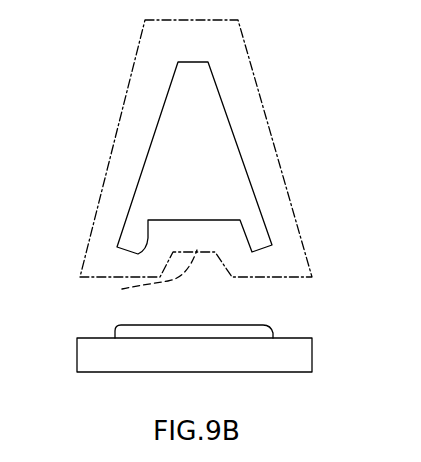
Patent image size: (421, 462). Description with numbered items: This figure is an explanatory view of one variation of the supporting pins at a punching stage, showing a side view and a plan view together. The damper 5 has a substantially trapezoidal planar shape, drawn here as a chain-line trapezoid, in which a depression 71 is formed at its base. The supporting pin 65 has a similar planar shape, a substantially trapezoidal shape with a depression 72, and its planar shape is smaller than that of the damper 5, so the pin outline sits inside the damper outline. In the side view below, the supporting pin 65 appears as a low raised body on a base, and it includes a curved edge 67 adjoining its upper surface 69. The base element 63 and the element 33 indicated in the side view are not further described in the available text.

The damper 5 is at (270, 130).
The supporting pin 65 is at (193, 118).
The depression 72 is at (144, 253).
The depression 71 is at (118, 291).
The upper surface 69 is at (196, 318).
The curved edge 67 is at (272, 329).
The substrate 63 is at (300, 338).
The base layer 33 is at (103, 358).